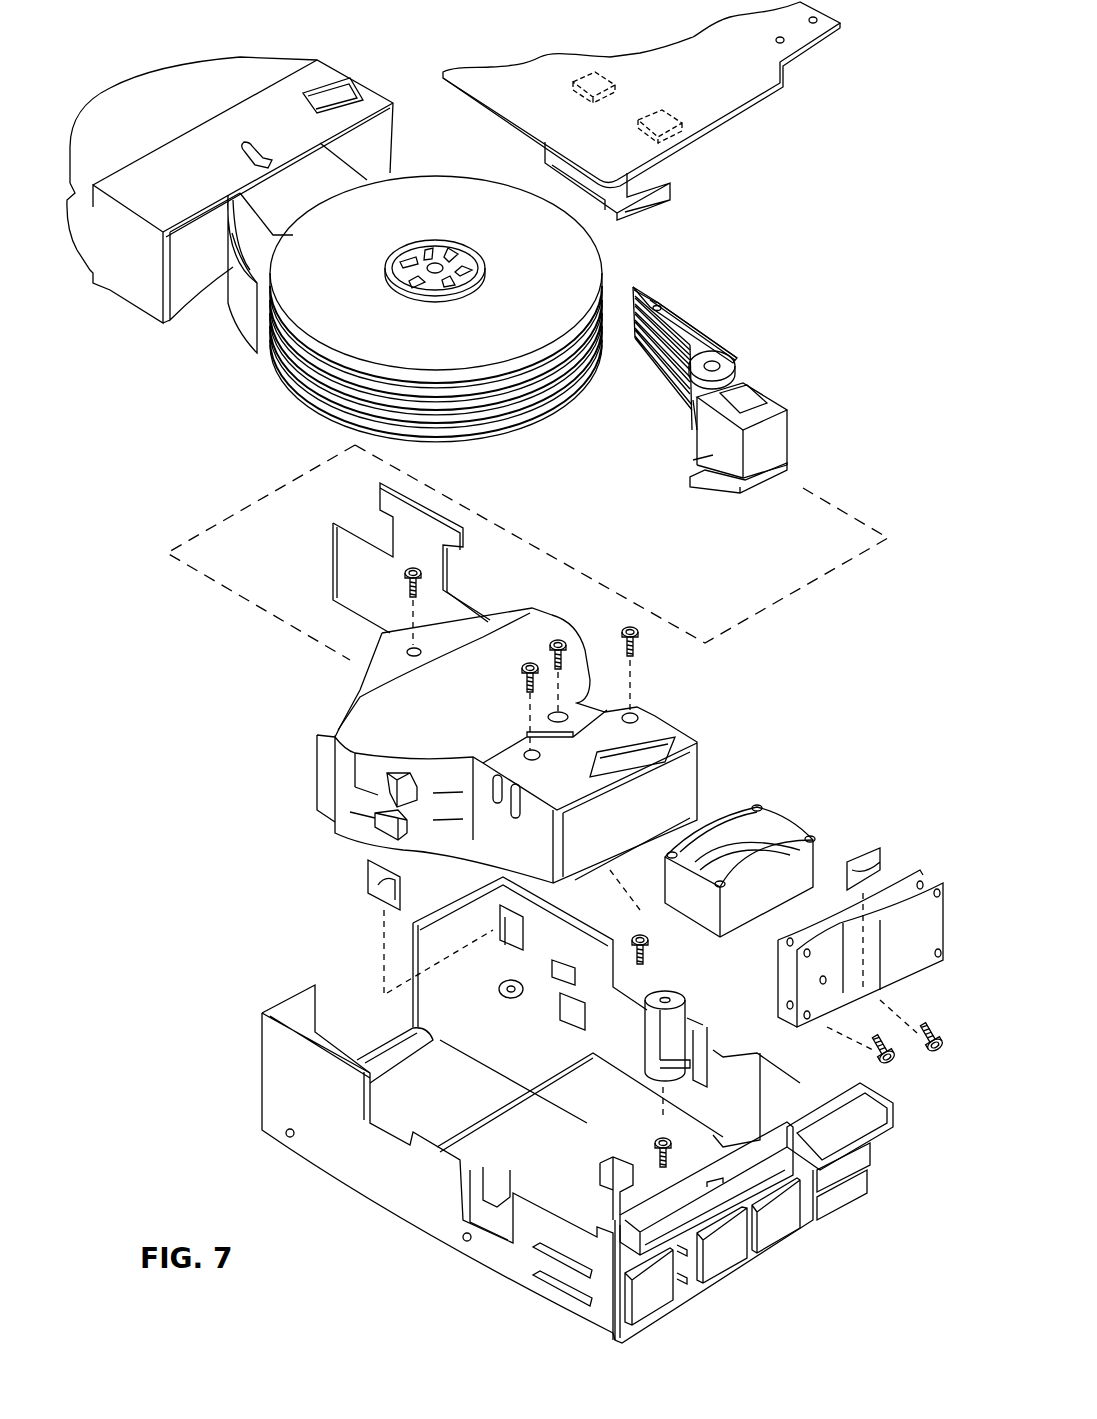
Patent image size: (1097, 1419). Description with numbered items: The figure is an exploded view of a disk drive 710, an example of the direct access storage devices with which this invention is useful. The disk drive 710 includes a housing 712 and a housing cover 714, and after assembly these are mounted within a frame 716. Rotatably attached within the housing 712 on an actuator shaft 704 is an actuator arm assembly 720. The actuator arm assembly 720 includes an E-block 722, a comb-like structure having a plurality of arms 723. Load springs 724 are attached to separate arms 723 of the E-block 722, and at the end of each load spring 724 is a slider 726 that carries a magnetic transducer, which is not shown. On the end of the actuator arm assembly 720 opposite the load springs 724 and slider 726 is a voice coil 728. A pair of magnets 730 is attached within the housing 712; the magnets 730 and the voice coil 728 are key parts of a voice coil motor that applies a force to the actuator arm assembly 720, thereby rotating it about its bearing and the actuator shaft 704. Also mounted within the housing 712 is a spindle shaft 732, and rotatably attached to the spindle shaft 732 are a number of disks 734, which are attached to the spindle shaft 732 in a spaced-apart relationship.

The disk drive 710 is at (717, 210).
The actuator shaft 704 is at (720, 367).
The housing 712 is at (510, 632).
The housing cover 714 is at (107, 292).
The frame 716 is at (397, 1193).
The actuator arm assembly 720 is at (710, 420).
The E-block 722 is at (638, 355).
The arms 723 is at (700, 330).
The load springs 724 is at (650, 292).
The slider 726 is at (637, 283).
The voice coil 728 is at (757, 463).
The magnets 730 is at (780, 827).
The spindle shaft 732 is at (433, 262).
The disks 734 is at (300, 385).